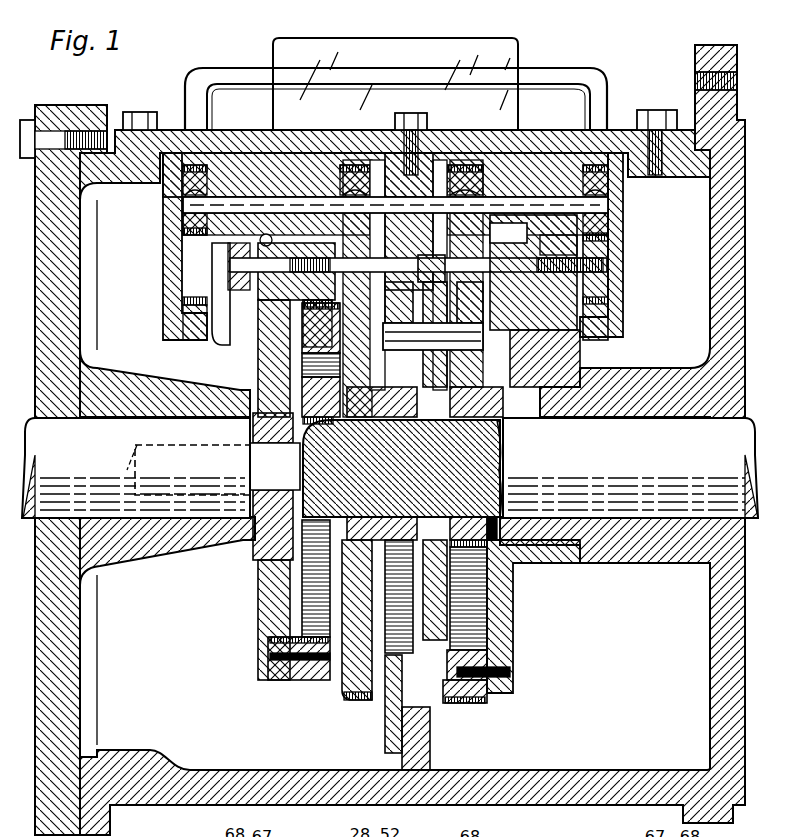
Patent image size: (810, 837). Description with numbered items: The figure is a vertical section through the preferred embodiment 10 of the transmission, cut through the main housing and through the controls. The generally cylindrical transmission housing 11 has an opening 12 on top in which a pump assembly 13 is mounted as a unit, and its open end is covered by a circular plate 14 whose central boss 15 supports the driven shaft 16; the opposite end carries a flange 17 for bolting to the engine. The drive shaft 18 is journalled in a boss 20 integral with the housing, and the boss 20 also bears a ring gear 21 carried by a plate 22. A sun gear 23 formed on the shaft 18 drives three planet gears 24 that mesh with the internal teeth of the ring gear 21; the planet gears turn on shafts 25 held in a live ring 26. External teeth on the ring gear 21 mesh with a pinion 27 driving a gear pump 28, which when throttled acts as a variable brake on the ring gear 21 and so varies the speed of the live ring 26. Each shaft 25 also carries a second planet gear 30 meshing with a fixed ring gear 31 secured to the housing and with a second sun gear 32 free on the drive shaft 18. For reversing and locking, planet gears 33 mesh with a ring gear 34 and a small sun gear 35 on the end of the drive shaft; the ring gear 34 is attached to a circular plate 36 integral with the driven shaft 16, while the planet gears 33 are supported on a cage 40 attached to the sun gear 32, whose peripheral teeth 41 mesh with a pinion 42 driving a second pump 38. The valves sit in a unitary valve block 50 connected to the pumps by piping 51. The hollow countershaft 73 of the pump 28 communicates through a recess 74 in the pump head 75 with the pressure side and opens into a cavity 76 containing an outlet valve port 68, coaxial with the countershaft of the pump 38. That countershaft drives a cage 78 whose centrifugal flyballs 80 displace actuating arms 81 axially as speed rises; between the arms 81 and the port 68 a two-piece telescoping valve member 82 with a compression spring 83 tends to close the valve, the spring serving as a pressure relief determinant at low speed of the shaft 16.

The preferred embodiment 10 is at (750, 263).
The transmission housing 11 is at (70, 333).
The opening 12 is at (165, 153).
The pump assembly 13 is at (212, 82).
The circular plate 14 is at (43, 308).
The boss 15 is at (124, 382).
The driven shaft 16 is at (74, 466).
The flange 17 is at (738, 62).
The drive shaft 18 is at (689, 466).
The boss 20 is at (630, 565).
The ring gear 21 is at (473, 690).
The plate 22 is at (507, 631).
The sun gear 23 is at (497, 425).
The planet gears 24 is at (493, 353).
The shafts 25 is at (433, 336).
The live cage or ring 26 is at (434, 640).
The pinion 27 is at (480, 172).
The gear pump 28 is at (598, 172).
The second planet gear 30 is at (399, 302).
The fixed ring gear 31 is at (307, 257).
The second sun gear 32 is at (391, 424).
The planet gears 33 is at (268, 393).
The ring gear 34 is at (306, 675).
The small sun gear 35 is at (303, 448).
The circular plate 36 is at (265, 368).
The pump 38 is at (180, 226).
The ring or cage 40 is at (357, 676).
The teeth 41 is at (348, 240).
The pinion 42 is at (350, 172).
The valve block 50 is at (441, 48).
The piping 51 is at (237, 75).
The outlet valve port 68 is at (545, 253).
The countershaft 73 is at (603, 292).
The recess 74 is at (615, 265).
The pump head 75 is at (622, 205).
The cavity / countershaft 76 is at (182, 268).
The cage 78 is at (225, 318).
The centrifugal flyballs 80 is at (273, 240).
The actuating arms 81 is at (250, 292).
The two-piece valve member 82 is at (470, 302).
The compression spring 83 is at (432, 255).